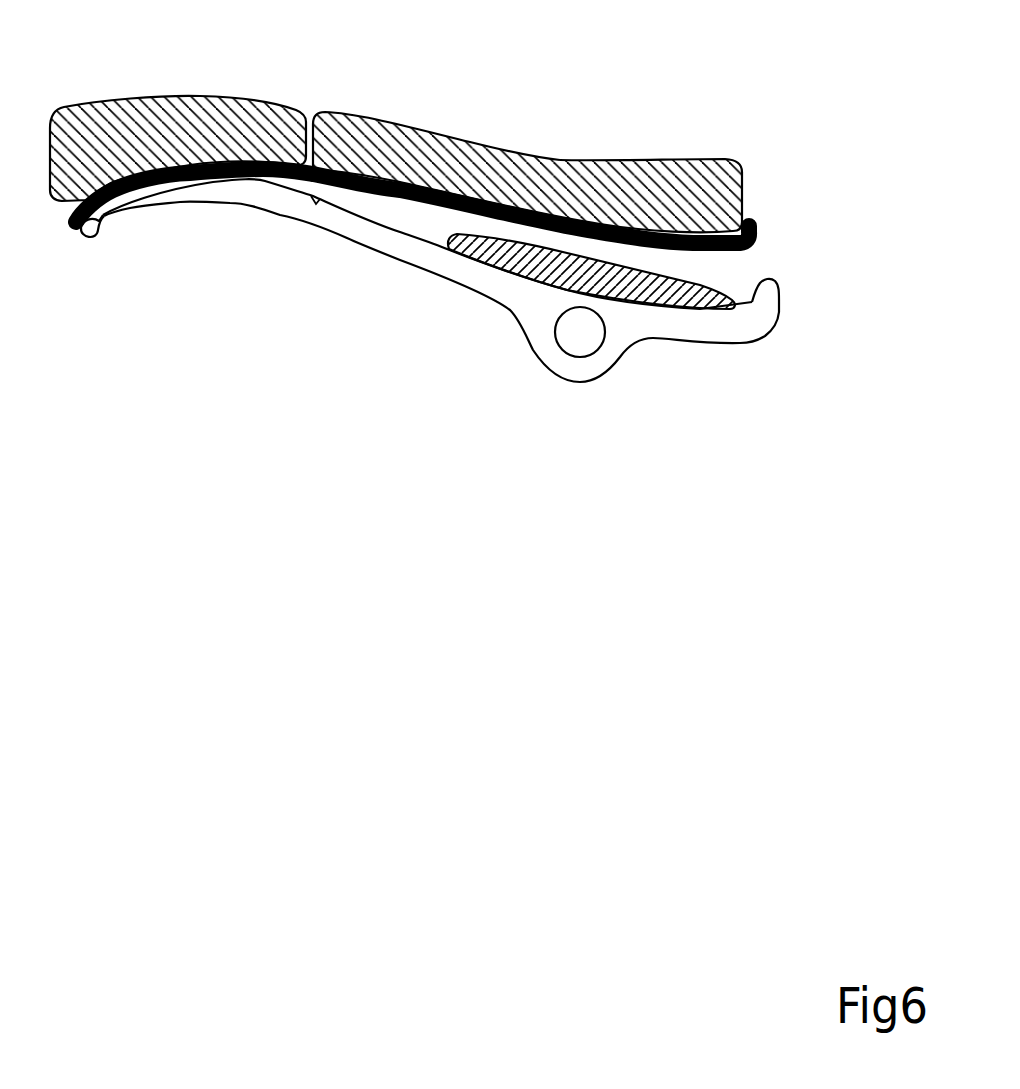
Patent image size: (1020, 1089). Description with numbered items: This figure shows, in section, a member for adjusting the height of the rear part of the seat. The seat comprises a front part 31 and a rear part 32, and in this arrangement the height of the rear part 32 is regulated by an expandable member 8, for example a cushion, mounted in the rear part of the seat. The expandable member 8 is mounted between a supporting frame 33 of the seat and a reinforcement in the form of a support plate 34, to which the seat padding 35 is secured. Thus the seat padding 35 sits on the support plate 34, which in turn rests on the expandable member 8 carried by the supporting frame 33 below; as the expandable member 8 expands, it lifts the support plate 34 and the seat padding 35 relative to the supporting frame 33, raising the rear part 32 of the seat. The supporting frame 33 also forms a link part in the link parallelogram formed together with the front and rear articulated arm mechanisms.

The front part 31 is at (113, 105).
The rear part 32 is at (688, 180).
The supporting frame 33 is at (453, 280).
The support plate 34 is at (177, 178).
The seat padding 35 is at (400, 142).
The expandable member 8 is at (700, 277).